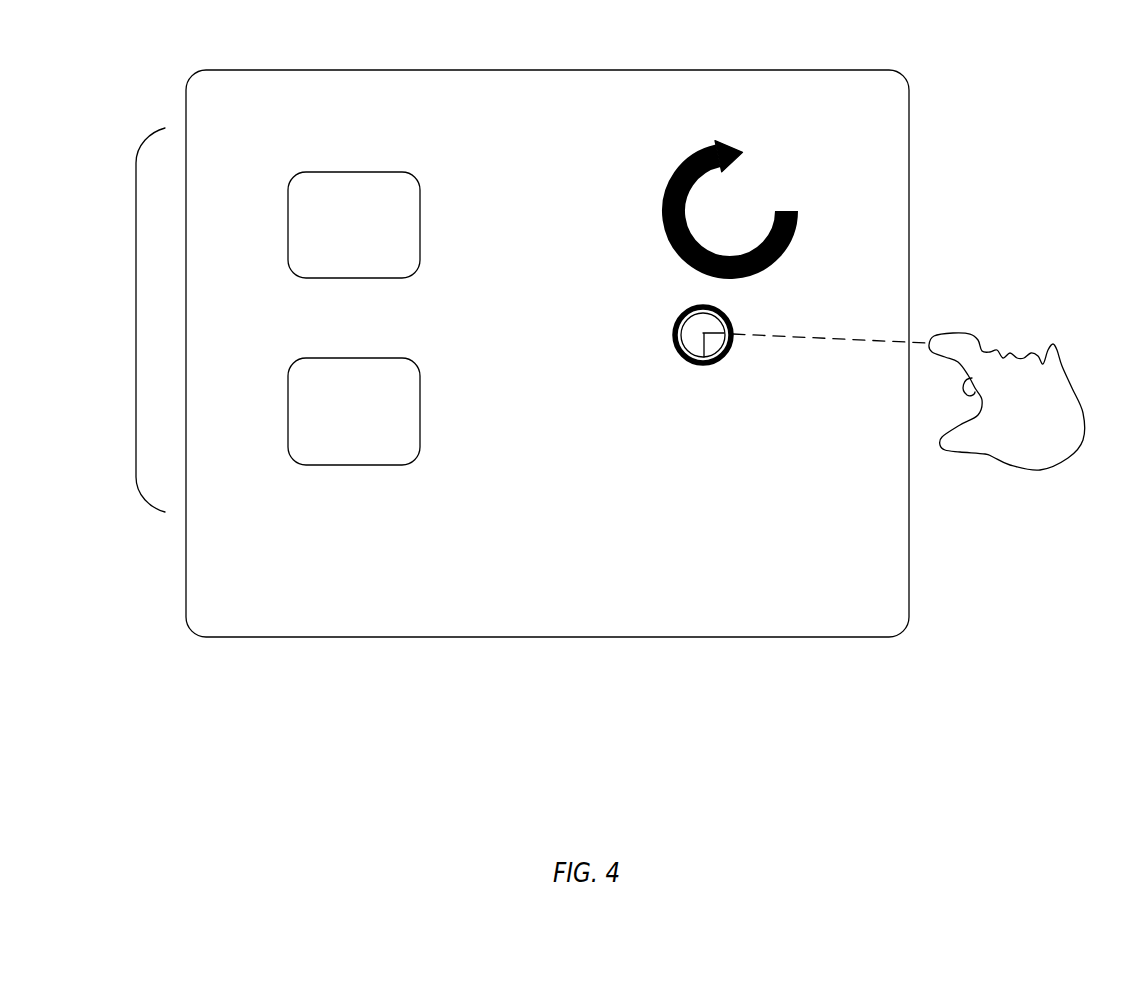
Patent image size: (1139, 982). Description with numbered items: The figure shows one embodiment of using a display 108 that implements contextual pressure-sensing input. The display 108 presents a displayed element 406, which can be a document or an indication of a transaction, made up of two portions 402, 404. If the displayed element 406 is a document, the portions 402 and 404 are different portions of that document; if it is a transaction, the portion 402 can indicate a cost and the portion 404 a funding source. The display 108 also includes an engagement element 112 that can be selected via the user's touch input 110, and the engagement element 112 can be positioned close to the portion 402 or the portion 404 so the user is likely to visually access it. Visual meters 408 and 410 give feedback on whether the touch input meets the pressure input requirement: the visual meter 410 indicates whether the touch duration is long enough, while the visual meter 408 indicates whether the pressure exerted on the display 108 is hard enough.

The display 108 is at (546, 69).
The displayed element 406 is at (136, 320).
The portion 402 is at (290, 172).
The portion 404 is at (290, 362).
The visual meter 410 is at (668, 188).
The engagement element 112 is at (673, 335).
The visual meter 408 is at (723, 357).
The user's touch input 110 is at (1056, 345).